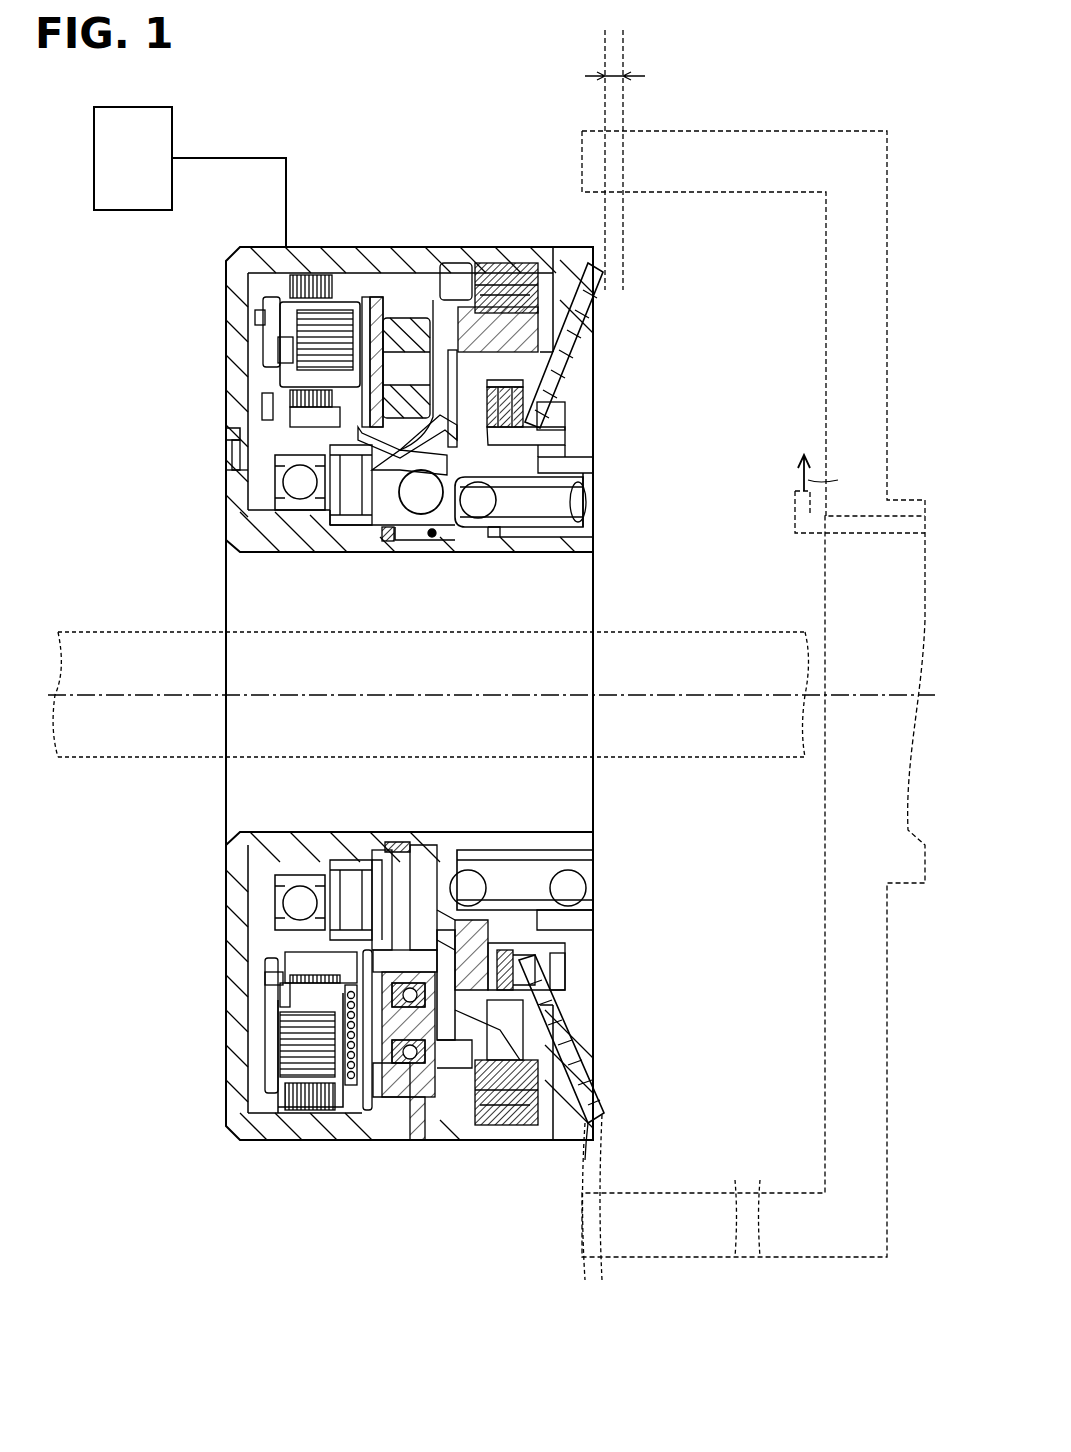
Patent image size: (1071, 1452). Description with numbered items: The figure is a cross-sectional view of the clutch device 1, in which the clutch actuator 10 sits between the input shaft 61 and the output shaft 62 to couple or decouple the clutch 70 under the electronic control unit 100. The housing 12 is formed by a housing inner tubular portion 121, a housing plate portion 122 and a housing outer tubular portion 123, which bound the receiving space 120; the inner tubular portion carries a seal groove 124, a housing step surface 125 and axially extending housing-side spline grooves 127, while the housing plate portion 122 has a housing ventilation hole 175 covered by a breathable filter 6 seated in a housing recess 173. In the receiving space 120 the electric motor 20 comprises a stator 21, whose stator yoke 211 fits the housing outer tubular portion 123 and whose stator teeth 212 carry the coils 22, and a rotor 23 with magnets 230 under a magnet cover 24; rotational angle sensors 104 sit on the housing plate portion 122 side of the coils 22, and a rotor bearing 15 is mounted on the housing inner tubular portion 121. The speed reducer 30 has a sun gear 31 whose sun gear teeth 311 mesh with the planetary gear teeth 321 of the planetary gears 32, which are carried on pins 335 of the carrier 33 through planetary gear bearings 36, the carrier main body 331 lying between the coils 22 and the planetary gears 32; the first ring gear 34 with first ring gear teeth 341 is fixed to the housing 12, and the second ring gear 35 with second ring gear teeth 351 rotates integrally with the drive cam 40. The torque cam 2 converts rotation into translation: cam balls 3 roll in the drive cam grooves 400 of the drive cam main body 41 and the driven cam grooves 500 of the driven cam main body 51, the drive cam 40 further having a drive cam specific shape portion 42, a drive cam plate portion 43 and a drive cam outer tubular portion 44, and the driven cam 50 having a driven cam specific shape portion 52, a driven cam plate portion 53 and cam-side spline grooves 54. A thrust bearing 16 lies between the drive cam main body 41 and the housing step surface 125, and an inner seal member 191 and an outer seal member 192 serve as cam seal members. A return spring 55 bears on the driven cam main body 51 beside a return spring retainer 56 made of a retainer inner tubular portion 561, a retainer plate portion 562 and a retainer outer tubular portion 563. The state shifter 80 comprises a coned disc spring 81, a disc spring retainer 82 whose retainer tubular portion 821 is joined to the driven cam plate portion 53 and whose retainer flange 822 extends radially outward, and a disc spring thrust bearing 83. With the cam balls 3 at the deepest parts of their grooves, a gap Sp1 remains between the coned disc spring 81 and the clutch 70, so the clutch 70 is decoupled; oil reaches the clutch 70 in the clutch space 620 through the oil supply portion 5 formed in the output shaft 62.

The clutch device 1 is at (672, 1338).
The torque cam 2 is at (428, 880).
The cam balls 3 is at (419, 514).
The oil supply portion 5 is at (878, 535).
The breathable filter 6 is at (226, 465).
The clutch actuator 10 is at (530, 1316).
The housing 12 is at (268, 1140).
The rotor bearing 15 is at (275, 890).
The thrust bearing 16 is at (352, 860).
The electric motor 20 is at (265, 1055).
The stator 21 is at (285, 1100).
The coils 22 is at (263, 330).
The rotor 23 is at (285, 958).
The magnet cover 24 is at (290, 980).
The speed reducer 30 is at (418, 1140).
The sun gear 31 is at (437, 935).
The planetary gears 32 is at (523, 393).
The carrier 33 is at (265, 1000).
The first ring gear 34 is at (397, 1140).
The second ring gear 35 is at (450, 1140).
The planetary gear bearings 36 is at (538, 1065).
The drive cam 40 is at (380, 850).
The drive cam main body 41 is at (325, 500).
The drive cam specific shape portion 42 is at (565, 414).
The drive cam plate portion 43 is at (457, 352).
The drive cam outer tubular portion 44 is at (538, 325).
The driven cam 50 is at (457, 862).
The driven cam main body 51 is at (440, 505).
The driven cam specific shape portion 52 is at (560, 425).
The driven cam plate portion 53 is at (430, 368).
The cam-side spline grooves 54 is at (483, 518).
The return spring 55 is at (575, 490).
The return spring retainer 56 is at (598, 510).
The input shaft 61 is at (66, 745).
The output shaft 62 is at (887, 952).
The clutch 70 is at (750, 1240).
The state shifter 80 is at (602, 1125).
The coned disc spring 81 is at (586, 1160).
The disc spring retainer 82 is at (513, 965).
The disc spring thrust bearing 83 is at (565, 985).
The electronic control unit 100 is at (132, 114).
The rotational angle sensors 104 is at (280, 352).
The receiving space 120 is at (280, 1050).
The housing inner tubular portion 121 is at (580, 542).
The housing plate portion 122 is at (297, 372).
The housing outer tubular portion 123 is at (318, 247).
The seal groove 124 is at (422, 845).
The housing step surface 125 is at (335, 860).
The housing-side spline grooves 127 is at (520, 527).
The housing recess 173 is at (226, 433).
The housing ventilation hole 175 is at (232, 452).
The inner seal member 191 is at (395, 842).
The outer seal member 192 is at (505, 263).
The stator yoke 211 is at (290, 288).
The stator teeth 212 is at (290, 398).
The magnets 230 is at (280, 990).
The sun gear teeth 311 is at (472, 1050).
The planetary gear teeth 321 is at (565, 915).
The carrier main body 331 is at (376, 297).
The pins 335 is at (408, 318).
The first ring gear teeth 341 is at (368, 1140).
The second ring gear teeth 351 is at (345, 1140).
The drive cam grooves 400 is at (390, 541).
The driven cam grooves 500 is at (432, 537).
The retainer inner tubular portion 561 is at (530, 550).
The retainer plate portion 562 is at (593, 480).
The retainer outer tubular portion 563 is at (570, 462).
The clutch space 620 is at (725, 1260).
The retainer tubular portion 821 is at (525, 945).
The retainer flange 822 is at (535, 975).
The gap Sp1 is at (615, 153).